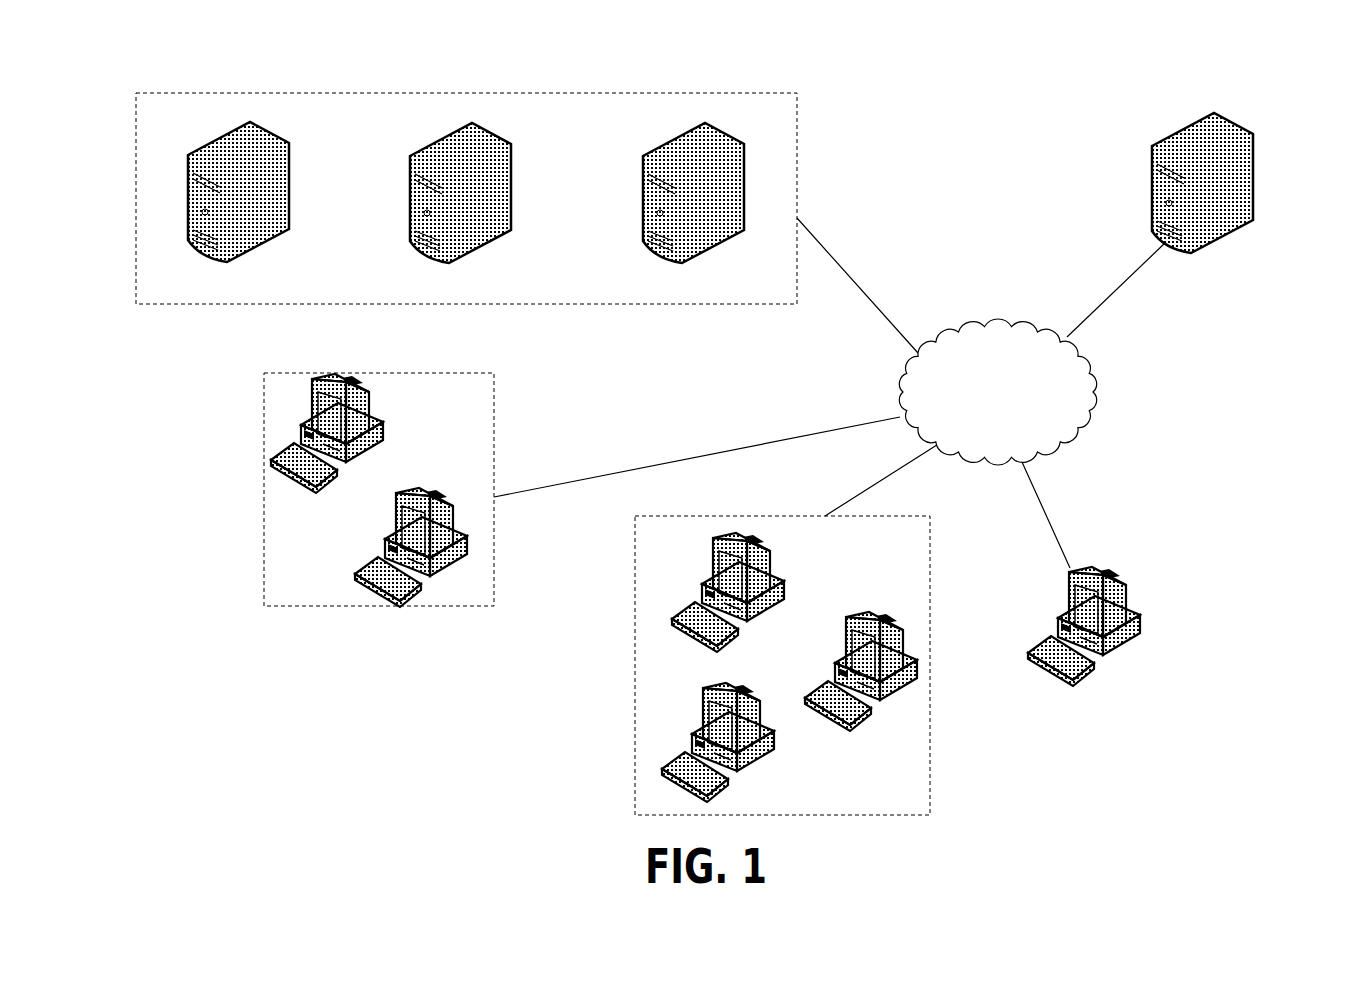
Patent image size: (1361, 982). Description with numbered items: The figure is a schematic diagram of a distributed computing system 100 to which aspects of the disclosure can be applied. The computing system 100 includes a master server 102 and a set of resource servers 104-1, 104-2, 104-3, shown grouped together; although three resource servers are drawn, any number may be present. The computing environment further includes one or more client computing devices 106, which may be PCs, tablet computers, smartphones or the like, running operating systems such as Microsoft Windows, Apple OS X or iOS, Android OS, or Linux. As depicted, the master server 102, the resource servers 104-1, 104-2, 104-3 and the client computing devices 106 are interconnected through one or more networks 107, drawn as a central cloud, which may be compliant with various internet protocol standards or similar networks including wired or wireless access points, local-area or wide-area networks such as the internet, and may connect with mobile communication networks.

The computing system 100 is at (1196, 534).
The master server 102 is at (1220, 145).
The resource server 104-1 is at (235, 150).
The resource server 104-2 is at (472, 140).
The resource server 104-3 is at (707, 157).
The client computing device 106 is at (307, 487).
The network 107 is at (1018, 378).